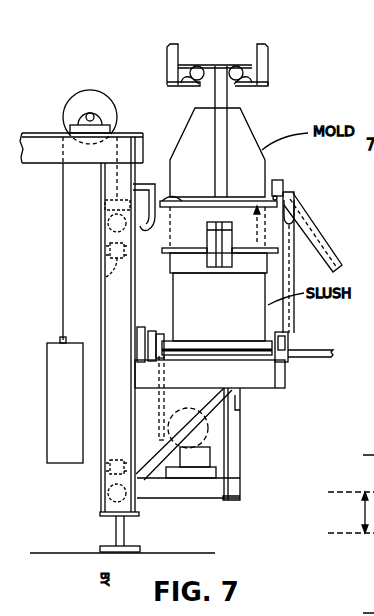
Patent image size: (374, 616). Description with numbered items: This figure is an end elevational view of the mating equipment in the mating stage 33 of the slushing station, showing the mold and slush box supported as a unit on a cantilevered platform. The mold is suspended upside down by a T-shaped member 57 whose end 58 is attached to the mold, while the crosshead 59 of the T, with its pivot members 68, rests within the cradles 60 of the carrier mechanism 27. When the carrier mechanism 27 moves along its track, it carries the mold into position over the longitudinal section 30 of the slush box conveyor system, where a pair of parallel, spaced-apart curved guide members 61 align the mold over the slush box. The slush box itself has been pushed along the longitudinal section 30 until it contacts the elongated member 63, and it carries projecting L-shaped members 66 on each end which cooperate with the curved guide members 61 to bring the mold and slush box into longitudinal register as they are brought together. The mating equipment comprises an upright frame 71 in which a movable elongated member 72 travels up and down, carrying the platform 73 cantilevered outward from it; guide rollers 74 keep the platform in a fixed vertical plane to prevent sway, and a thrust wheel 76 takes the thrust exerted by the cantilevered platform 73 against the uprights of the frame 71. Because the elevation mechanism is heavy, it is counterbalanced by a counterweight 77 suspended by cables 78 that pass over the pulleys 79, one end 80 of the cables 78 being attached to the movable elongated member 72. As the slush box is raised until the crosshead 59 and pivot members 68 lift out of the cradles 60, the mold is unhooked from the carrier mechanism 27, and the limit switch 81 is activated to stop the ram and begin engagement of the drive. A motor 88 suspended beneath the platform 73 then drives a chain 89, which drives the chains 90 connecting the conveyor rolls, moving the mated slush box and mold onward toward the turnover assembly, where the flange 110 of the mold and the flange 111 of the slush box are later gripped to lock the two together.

The carrier mechanism 27 is at (266, 59).
The pivot members 68 is at (233, 66).
The cradles 60 is at (182, 80).
The crosshead 59 is at (214, 76).
The T-shaped member 57 is at (240, 136).
The end 58 is at (221, 198).
The limit switch 81 is at (283, 182).
The curved guide members 61 is at (152, 226).
The mating stage 33 is at (268, 233).
The flange 110 is at (173, 208).
The flange 111 is at (168, 253).
The L-shaped members 66 is at (230, 258).
The longitudinal section 30 is at (262, 343).
The chains 90 is at (164, 336).
The elongated member 63 is at (160, 333).
The chain 89 is at (165, 392).
The motor 88 is at (188, 410).
The platform 73 is at (258, 388).
The upright frame 71 is at (112, 321).
The movable elongated member 72 is at (105, 210).
The guide rollers 74 is at (108, 220).
The thrust wheel 76 is at (106, 277).
The counterweight 77 is at (60, 463).
The cables 78 is at (63, 240).
The pulleys 79 is at (80, 104).
The end 80 is at (97, 168).